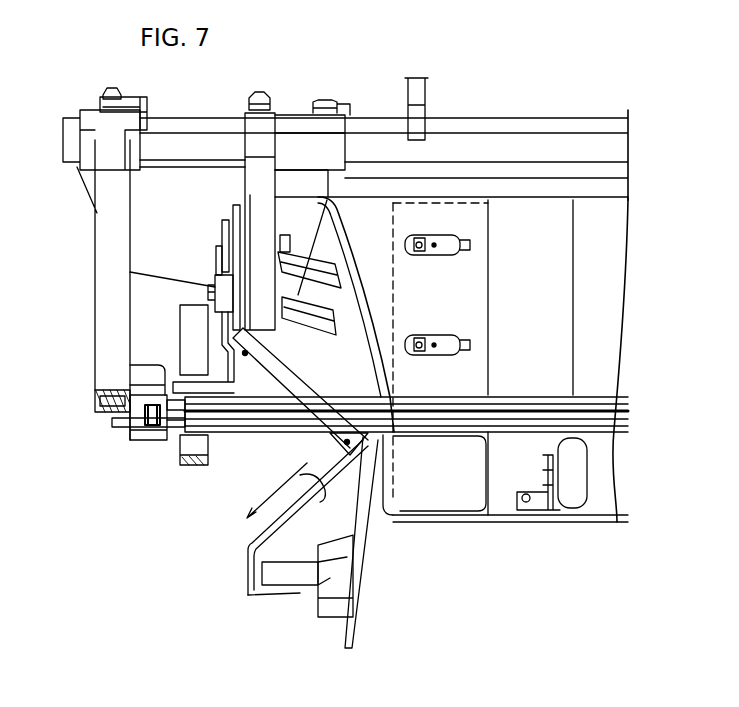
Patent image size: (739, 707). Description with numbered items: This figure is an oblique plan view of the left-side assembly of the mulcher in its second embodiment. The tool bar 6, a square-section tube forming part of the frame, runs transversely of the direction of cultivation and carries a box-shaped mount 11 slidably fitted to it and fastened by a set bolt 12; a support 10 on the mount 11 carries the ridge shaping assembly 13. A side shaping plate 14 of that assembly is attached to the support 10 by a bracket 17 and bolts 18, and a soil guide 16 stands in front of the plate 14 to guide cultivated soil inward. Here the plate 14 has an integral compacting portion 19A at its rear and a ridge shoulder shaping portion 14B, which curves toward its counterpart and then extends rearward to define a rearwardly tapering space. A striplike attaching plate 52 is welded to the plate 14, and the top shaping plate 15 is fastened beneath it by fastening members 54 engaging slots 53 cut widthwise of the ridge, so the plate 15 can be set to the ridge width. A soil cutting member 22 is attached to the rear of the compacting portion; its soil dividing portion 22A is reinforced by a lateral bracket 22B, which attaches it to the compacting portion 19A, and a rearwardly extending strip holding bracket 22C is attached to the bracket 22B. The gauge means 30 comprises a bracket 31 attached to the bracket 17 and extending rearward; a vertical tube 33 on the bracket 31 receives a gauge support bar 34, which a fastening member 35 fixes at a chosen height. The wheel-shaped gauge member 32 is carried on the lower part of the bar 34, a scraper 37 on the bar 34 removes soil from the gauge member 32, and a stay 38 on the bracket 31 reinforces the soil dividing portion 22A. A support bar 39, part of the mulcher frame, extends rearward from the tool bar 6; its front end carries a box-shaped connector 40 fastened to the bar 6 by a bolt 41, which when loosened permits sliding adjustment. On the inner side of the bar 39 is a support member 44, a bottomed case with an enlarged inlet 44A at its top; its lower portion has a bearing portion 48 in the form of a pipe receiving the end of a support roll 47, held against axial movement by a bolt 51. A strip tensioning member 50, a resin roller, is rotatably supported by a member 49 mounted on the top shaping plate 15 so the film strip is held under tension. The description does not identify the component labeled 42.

The tool bar 6 is at (515, 130).
The support 10 is at (247, 193).
The box-shaped mount 11 is at (293, 120).
The set bolt 12 is at (257, 92).
The ridge shaping assembly 13 is at (476, 532).
The side shaping plate 14 is at (380, 348).
The ridge shoulder shaping portion 14B is at (368, 362).
The top shaping plate 15 is at (595, 522).
The soil guide 16 is at (143, 207).
The bracket 17 is at (248, 203).
The bolt 18 is at (284, 242).
The compacting portion 19A is at (353, 607).
The soil cutting member 22 is at (242, 556).
The soil dividing portion 22A is at (330, 497).
The lateral bracket 22B is at (282, 573).
The strip holding bracket 22C is at (335, 600).
The gauge means 30 is at (193, 473).
The bracket 31 is at (237, 247).
The gauge member 32 is at (197, 468).
The vertical tube 33 is at (217, 266).
The gauge support bar 34 is at (222, 232).
The fastening member 35 is at (210, 290).
The scraper 37 is at (222, 366).
The stay 38 is at (270, 362).
The support bar 39 is at (100, 293).
The box-shaped connector 40 is at (90, 130).
The bolt 41 is at (113, 78).
The shaft 42 is at (294, 440).
The support member 44 is at (128, 427).
The enlarged inlet 44A is at (148, 385).
The support roll 47 is at (253, 445).
The bearing portion 48 is at (147, 437).
The member 49 is at (538, 510).
The strip tensioning member 50 is at (573, 498).
The bolt 51 is at (157, 433).
The attaching plate 52 is at (389, 517).
The slot 53 is at (470, 244).
The fastening member 54 is at (424, 258).